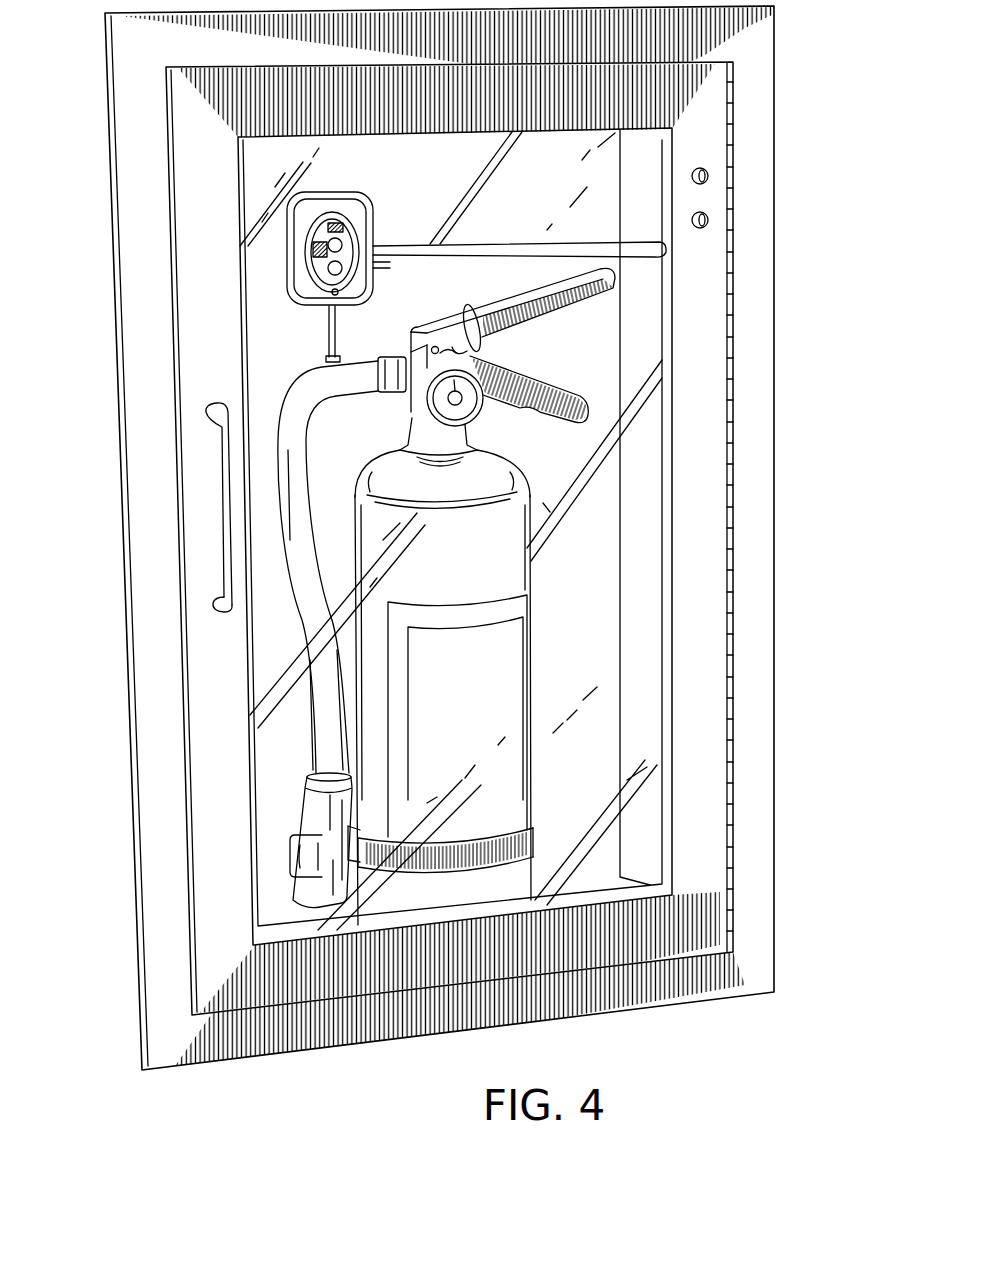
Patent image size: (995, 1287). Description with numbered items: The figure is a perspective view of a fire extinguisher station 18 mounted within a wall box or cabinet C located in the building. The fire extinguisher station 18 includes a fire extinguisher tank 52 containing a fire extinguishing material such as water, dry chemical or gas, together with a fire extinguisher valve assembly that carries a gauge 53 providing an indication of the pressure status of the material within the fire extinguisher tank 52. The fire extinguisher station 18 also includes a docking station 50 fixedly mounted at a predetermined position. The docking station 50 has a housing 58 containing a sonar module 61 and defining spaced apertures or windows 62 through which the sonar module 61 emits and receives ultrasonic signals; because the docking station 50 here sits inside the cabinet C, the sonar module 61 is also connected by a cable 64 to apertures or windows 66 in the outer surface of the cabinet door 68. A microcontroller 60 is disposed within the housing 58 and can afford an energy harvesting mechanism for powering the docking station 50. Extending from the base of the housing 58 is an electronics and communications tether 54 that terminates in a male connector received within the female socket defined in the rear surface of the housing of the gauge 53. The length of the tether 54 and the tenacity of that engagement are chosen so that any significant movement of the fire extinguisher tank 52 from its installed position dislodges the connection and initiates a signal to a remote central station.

The fire extinguisher station 18 is at (84, 921).
The cabinet C is at (757, 885).
The cabinet door 68 is at (713, 108).
The apertures or windows 66 is at (710, 220).
The docking station 50 is at (373, 230).
The housing 58 is at (318, 202).
The microcontroller 60 is at (342, 228).
The sonar module 61 is at (313, 253).
The apertures or windows 62 is at (375, 265).
The cable 64 is at (483, 243).
The electronics and communications tether 54 is at (326, 335).
The fire extinguisher tank 52 is at (503, 462).
The gauge 53 is at (510, 364).